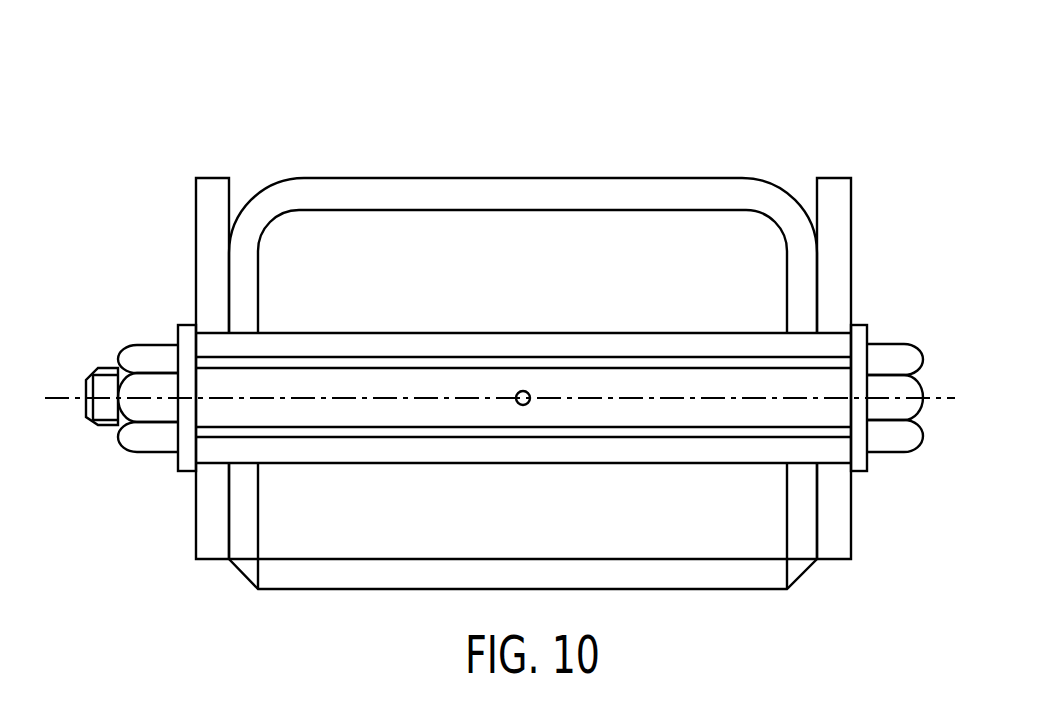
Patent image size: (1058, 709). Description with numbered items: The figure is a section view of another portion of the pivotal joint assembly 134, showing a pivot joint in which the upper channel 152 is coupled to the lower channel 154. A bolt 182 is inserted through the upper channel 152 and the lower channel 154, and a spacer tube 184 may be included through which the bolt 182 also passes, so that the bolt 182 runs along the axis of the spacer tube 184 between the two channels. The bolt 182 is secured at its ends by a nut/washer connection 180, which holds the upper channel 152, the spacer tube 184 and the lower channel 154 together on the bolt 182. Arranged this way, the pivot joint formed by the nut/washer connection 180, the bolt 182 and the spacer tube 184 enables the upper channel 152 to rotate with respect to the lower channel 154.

The pivotal joint assembly 134 is at (275, 113).
The upper channel 152 is at (420, 177).
The lower channel 154 is at (852, 561).
The nut/washer connection 180 is at (123, 347).
The bolt 182 is at (525, 391).
The spacer tube 184 is at (442, 463).